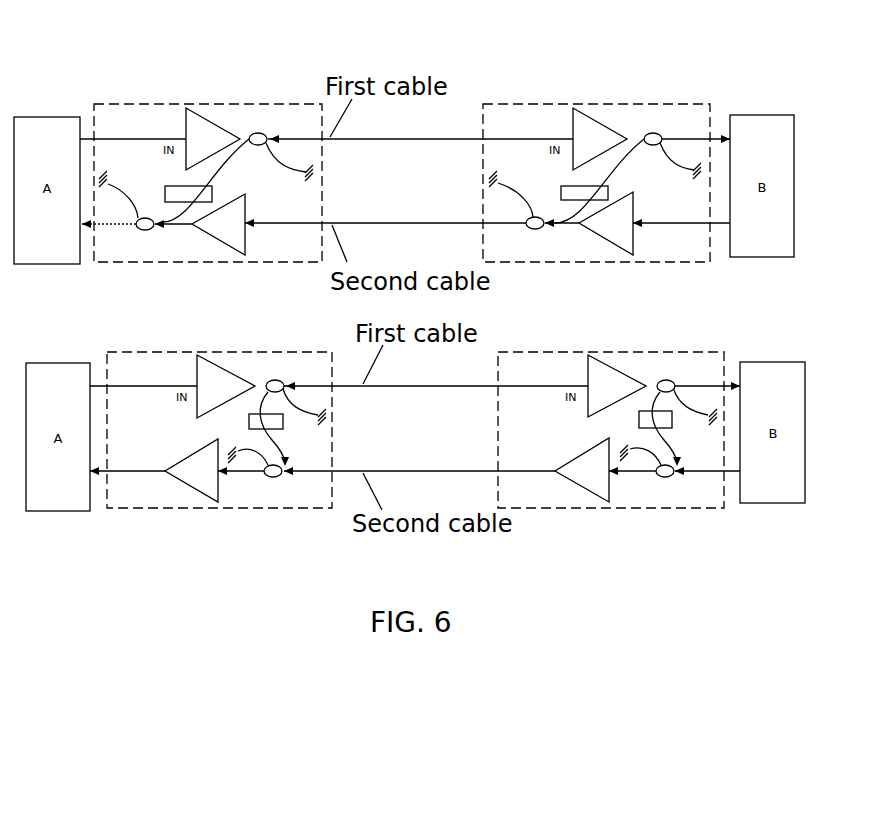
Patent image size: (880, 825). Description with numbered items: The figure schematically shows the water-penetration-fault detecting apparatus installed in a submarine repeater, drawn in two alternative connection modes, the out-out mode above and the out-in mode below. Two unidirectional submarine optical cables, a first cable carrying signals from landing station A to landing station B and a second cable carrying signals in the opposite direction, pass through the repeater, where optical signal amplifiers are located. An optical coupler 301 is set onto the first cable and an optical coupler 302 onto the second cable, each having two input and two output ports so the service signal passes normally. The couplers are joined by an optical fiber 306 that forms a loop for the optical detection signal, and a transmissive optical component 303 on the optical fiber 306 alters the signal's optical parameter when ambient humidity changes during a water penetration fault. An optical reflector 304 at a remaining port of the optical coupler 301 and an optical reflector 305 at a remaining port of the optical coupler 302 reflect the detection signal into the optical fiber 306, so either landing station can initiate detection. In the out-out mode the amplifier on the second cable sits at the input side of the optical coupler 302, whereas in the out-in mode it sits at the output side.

The optical coupler 301 is at (263, 133).
The optical coupler 302 is at (139, 230).
The transmissive optical component 303 is at (245, 141).
The optical reflector 304 is at (318, 173).
The optical reflector 305 is at (106, 173).
The optical fiber 306 is at (223, 160).